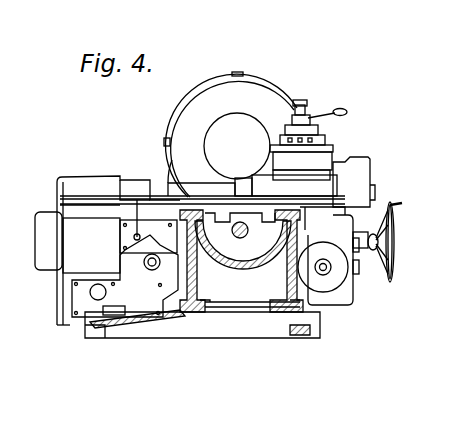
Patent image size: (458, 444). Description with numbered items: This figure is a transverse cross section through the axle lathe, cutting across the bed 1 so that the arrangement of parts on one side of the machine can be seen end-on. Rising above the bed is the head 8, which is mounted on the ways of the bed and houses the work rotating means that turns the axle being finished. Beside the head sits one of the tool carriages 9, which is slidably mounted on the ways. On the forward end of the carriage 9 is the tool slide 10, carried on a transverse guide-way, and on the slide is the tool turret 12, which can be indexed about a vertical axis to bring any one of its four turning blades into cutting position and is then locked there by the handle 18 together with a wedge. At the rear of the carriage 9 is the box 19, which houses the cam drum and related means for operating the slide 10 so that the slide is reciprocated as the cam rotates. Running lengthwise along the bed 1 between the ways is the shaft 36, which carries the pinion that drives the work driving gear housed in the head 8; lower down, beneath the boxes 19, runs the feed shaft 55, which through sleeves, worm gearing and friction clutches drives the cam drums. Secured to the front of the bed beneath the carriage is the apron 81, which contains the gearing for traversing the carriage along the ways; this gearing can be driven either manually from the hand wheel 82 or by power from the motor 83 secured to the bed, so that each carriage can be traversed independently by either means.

The bed 1 is at (198, 276).
The head 8 is at (270, 85).
The tool carriage 9 is at (345, 208).
The tool slide 10 is at (365, 178).
The tool turret 12 is at (325, 158).
The handle 18 is at (322, 112).
The box 19 is at (68, 182).
The shaft 36 is at (244, 240).
The feed shaft 55 is at (150, 265).
The apron 81 is at (355, 298).
The hand wheel 82 is at (393, 258).
The motor 83 is at (328, 285).